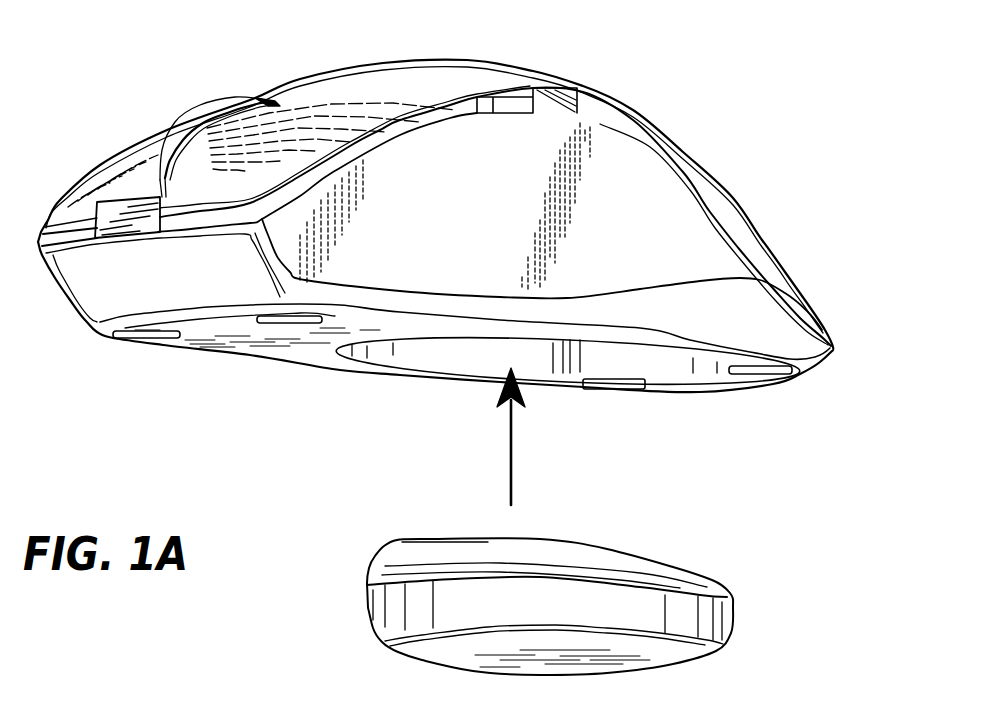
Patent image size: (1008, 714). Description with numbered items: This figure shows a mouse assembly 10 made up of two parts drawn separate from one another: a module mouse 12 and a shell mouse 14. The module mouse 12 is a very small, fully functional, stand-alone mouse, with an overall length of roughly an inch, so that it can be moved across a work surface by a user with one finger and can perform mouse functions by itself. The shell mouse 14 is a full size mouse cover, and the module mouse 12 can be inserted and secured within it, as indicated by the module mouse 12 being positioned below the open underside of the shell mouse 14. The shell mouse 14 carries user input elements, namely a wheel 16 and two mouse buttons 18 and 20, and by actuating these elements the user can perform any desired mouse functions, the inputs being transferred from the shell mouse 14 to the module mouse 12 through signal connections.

The mouse assembly 10 is at (697, 47).
The module mouse 12 is at (700, 592).
The shell mouse 14 is at (768, 262).
The wheel 16 is at (220, 120).
The mouse button 18 is at (433, 80).
The mouse button 20 is at (97, 181).